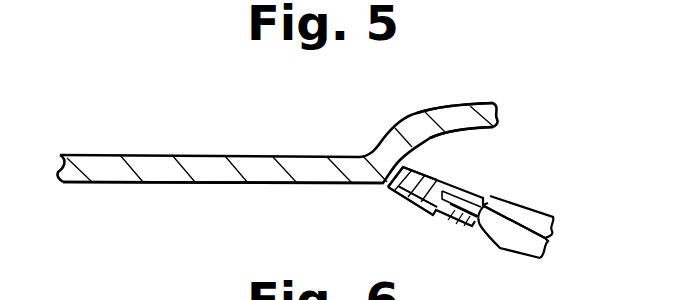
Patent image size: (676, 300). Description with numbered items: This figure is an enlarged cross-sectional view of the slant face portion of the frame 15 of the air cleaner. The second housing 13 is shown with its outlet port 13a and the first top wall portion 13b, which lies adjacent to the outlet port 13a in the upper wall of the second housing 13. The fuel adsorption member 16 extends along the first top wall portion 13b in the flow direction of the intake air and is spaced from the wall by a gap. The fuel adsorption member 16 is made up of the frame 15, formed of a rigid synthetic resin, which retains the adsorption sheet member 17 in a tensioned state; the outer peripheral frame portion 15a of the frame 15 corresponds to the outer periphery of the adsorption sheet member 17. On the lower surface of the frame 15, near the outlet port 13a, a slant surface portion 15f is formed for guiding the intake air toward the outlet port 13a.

The second housing 13 is at (205, 156).
The outlet port 13a is at (125, 183).
The first top wall portion 13b is at (452, 109).
The frame 15 is at (482, 199).
The outer peripheral frame portion 15a is at (452, 160).
The slant surface portion 15f is at (405, 204).
The fuel adsorption member 16 is at (517, 243).
The adsorption sheet member 17 is at (543, 220).